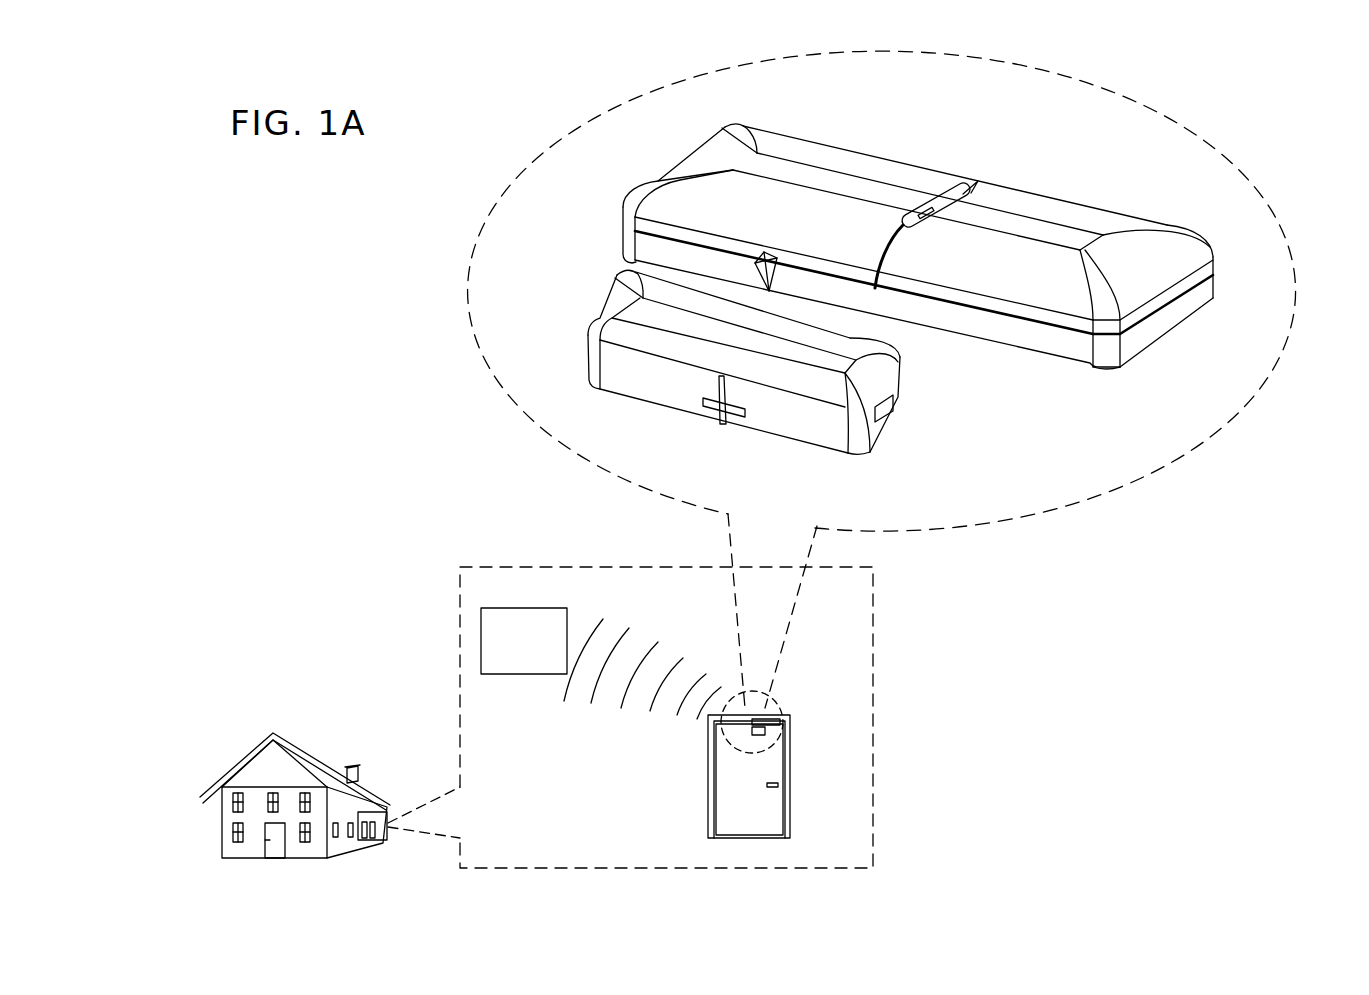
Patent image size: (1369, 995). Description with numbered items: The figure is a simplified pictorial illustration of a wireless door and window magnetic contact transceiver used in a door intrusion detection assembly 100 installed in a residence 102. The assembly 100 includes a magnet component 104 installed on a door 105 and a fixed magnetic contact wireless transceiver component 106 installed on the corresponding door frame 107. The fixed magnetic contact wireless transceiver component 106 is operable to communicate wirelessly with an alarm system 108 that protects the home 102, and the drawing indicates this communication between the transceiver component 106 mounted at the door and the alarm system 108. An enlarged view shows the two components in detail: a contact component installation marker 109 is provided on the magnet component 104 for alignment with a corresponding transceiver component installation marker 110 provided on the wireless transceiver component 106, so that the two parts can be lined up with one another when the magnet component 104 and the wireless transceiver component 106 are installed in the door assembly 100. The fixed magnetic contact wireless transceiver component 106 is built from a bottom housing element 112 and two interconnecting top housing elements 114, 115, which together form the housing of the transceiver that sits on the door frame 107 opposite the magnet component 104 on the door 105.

The door intrusion detection assembly 100 is at (685, 768).
The residence 102 is at (240, 760).
The magnet component 104 is at (603, 302).
The door 105 is at (707, 750).
The fixed magnetic contact wireless transceiver component 106 is at (866, 125).
The door frame 107 is at (710, 788).
The alarm system 108 is at (527, 610).
The contact component installation marker 109 is at (722, 420).
The transceiver component installation marker 110 is at (764, 252).
The bottom housing element 112 is at (1138, 345).
The top housing element 114 is at (893, 200).
The top housing element 115 is at (1023, 225).